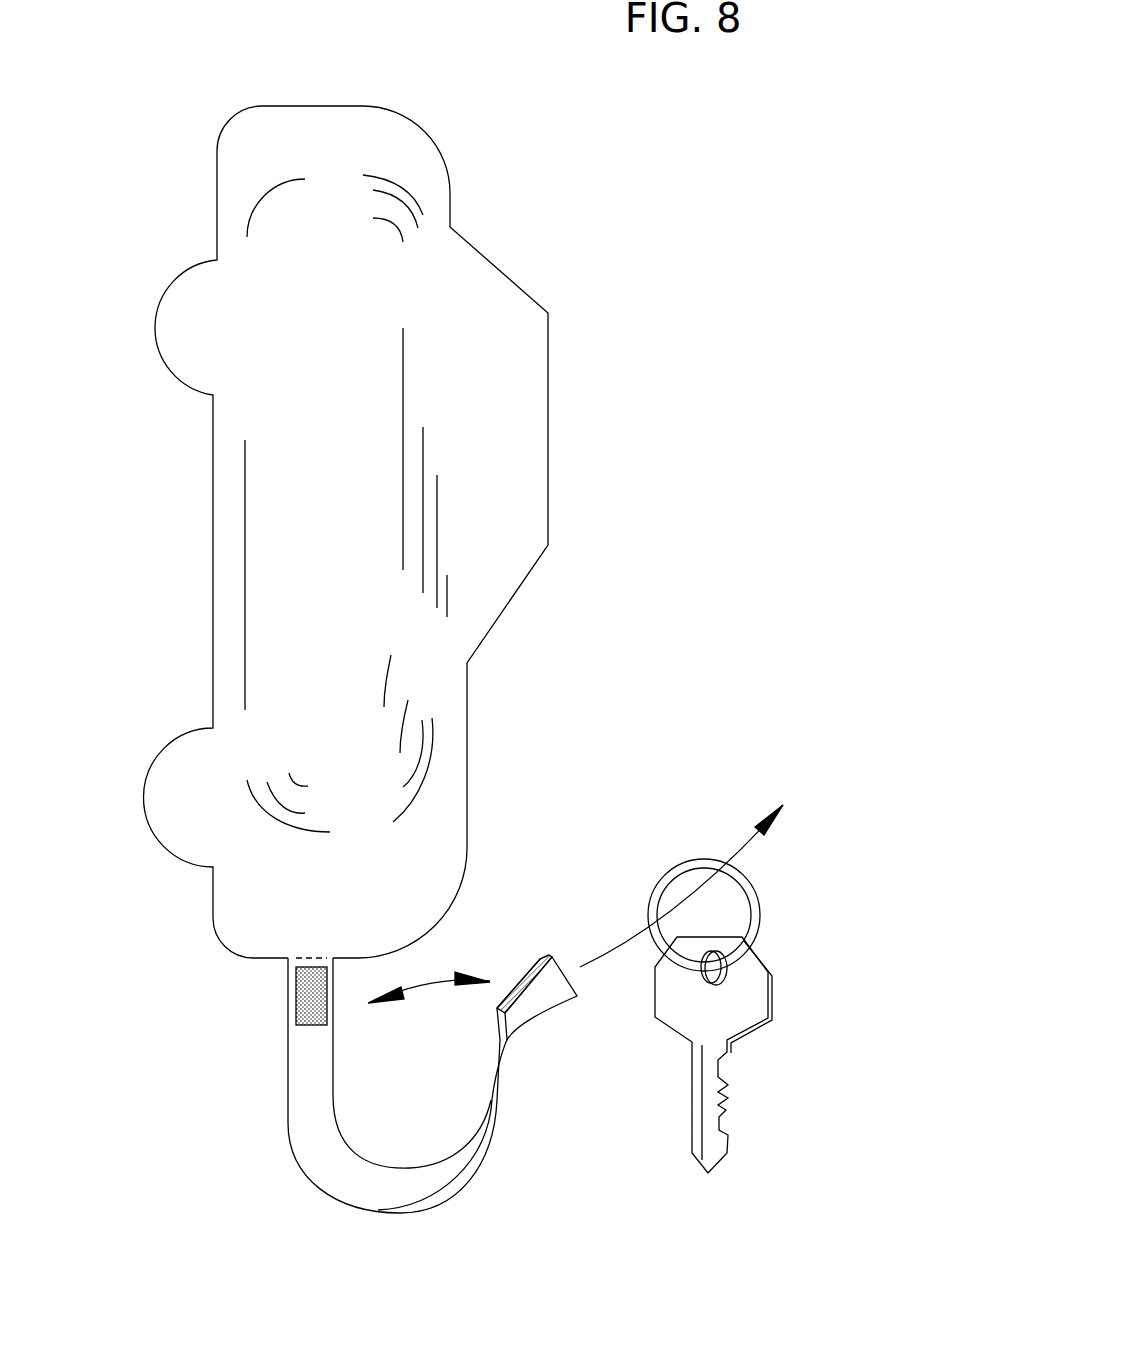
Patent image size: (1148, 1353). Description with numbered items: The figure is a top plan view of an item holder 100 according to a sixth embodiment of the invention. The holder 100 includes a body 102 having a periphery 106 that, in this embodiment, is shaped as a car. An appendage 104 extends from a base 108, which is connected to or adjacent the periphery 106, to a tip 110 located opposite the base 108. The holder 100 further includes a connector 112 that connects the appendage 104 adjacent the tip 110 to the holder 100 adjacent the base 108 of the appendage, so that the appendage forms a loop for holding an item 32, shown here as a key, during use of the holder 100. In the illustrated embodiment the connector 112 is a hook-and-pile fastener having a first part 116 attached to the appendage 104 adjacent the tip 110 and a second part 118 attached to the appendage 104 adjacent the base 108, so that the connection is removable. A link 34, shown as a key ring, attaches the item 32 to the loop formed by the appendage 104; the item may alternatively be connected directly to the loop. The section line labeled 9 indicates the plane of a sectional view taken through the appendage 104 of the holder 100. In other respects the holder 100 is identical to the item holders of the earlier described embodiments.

The section line 9- 9 is at (326, 80).
The item 32 is at (770, 996).
The link 34 is at (694, 858).
The item holder 100 is at (642, 388).
The body 102 is at (480, 248).
The appendage 104 is at (288, 1097).
The periphery 106 is at (287, 968).
The base 108 is at (315, 958).
The tip 110 is at (573, 978).
The connector 112 is at (612, 860).
The first part 116 is at (545, 960).
The second part 118 is at (335, 982).